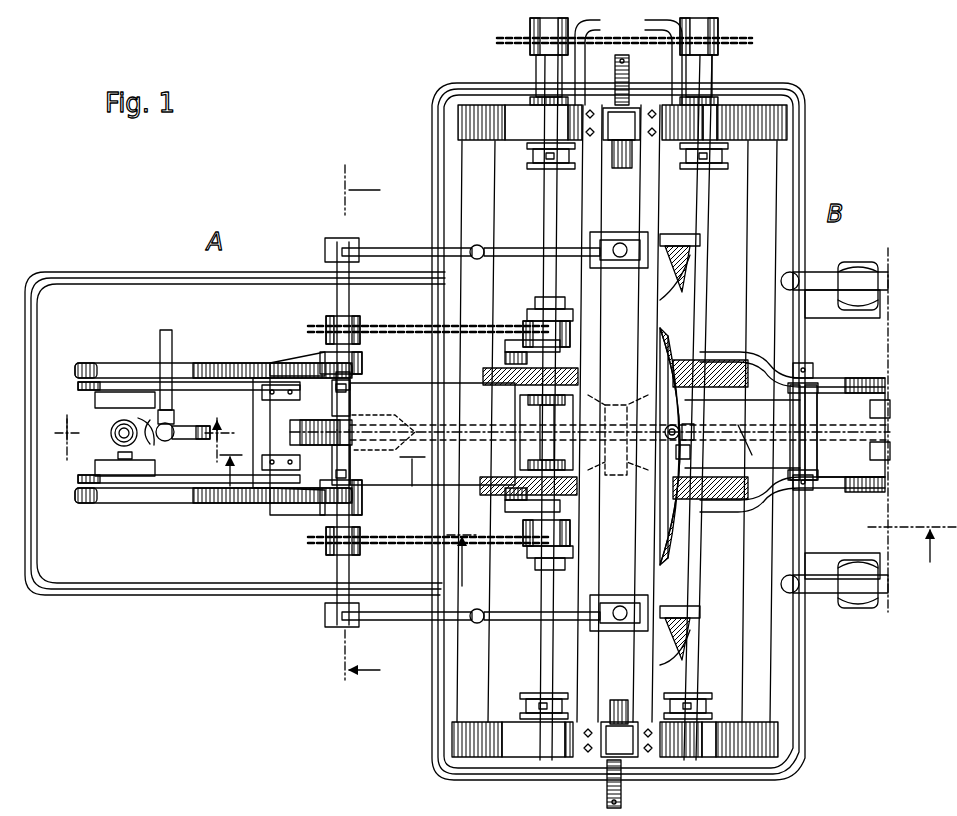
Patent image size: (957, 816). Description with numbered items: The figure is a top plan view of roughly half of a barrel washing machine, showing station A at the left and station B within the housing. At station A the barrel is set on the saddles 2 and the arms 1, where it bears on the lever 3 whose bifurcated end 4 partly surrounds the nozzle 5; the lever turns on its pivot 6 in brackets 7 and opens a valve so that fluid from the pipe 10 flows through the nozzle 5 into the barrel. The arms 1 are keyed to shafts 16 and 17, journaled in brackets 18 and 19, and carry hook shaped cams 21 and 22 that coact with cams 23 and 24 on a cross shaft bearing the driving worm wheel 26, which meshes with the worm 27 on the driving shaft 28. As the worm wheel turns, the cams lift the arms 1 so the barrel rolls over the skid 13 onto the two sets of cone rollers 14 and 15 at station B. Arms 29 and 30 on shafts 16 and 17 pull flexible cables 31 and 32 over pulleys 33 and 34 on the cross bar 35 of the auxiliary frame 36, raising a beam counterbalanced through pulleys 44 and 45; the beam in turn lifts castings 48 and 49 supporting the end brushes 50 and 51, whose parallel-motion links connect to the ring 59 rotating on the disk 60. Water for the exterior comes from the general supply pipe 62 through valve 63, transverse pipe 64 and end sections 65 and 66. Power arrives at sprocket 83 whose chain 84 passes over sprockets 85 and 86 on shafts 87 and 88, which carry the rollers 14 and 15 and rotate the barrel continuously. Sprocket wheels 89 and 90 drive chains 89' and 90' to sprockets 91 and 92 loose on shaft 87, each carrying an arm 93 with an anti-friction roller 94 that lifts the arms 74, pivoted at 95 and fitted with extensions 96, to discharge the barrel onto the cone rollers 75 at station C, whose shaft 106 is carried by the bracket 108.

The arms 1 is at (258, 363).
The saddles 2 is at (78, 389).
The lever 3 is at (168, 445).
The bifurcated end 4 is at (110, 458).
The nozzle 5 is at (110, 432).
The pivot 6 is at (208, 428).
The brackets 7 is at (145, 442).
The pipe 10 is at (172, 413).
The skid 13 is at (590, 434).
The rollers 14 is at (492, 378).
The rollers 15 is at (750, 370).
The shaft 16 is at (337, 564).
The shaft 17 is at (337, 299).
The bracket 18 is at (370, 490).
The bracket 19 is at (355, 385).
The hook shaped cam 21 is at (350, 458).
The hook shaped cam 22 is at (346, 410).
The cam 23 is at (318, 452).
The cam 24 is at (340, 362).
The driving worm wheel 26 is at (312, 418).
The worm 27 is at (376, 418).
The driving shaft 28 is at (488, 432).
The arm 29 is at (398, 620).
The arm 30 is at (388, 248).
The flexible cable 31 is at (503, 620).
The flexible cable 32 is at (515, 248).
The pulley 33 is at (650, 610).
The pulley 34 is at (650, 245).
The cross bar 35 is at (676, 556).
The auxiliary frame 36 is at (470, 107).
The pulley 44 is at (598, 745).
The pulley 45 is at (612, 145).
The casting 48 is at (690, 630).
The casting 49 is at (690, 246).
The brush 50 is at (690, 612).
The brush 51 is at (690, 270).
The ring 59 is at (622, 790).
The disk 60 is at (629, 85).
The general supply pipe 62 is at (690, 428).
The valve 63 is at (747, 440).
The transverse pipe 64 is at (692, 462).
The end section 65 is at (690, 645).
The end section 66 is at (690, 292).
The arms 74 is at (720, 356).
The cone rollers 75 is at (876, 380).
The sprocket 83 is at (607, 48).
The chain 84 is at (527, 46).
The sprocket 85 is at (530, 28).
The sprocket 86 is at (718, 28).
The shaft 87 is at (546, 192).
The shaft 88 is at (703, 186).
The sprocket wheel 89 is at (428, 556).
The chain 89' is at (448, 551).
The sprocket wheel 90 is at (428, 314).
The chain 90' is at (450, 343).
The sprocket 91 is at (525, 560).
The sprocket 92 is at (535, 320).
The arm 93 is at (505, 346).
The anti-friction roller 94 is at (505, 358).
The pivot 95 is at (810, 446).
The extensions 96 is at (832, 378).
The shaft 106 is at (880, 435).
The bracket 108 is at (880, 416).